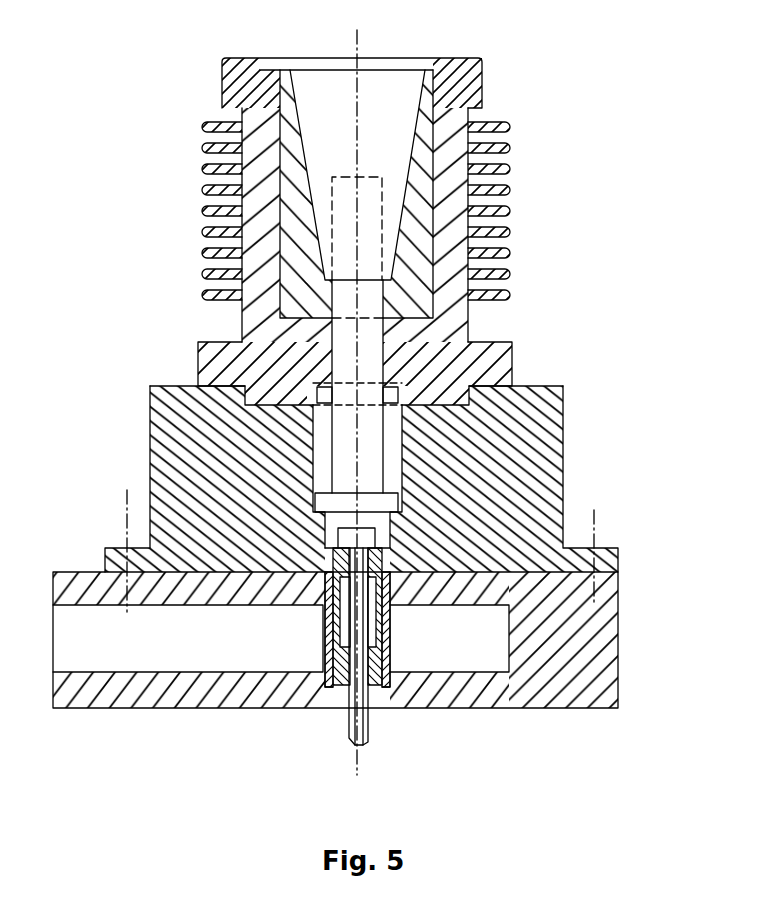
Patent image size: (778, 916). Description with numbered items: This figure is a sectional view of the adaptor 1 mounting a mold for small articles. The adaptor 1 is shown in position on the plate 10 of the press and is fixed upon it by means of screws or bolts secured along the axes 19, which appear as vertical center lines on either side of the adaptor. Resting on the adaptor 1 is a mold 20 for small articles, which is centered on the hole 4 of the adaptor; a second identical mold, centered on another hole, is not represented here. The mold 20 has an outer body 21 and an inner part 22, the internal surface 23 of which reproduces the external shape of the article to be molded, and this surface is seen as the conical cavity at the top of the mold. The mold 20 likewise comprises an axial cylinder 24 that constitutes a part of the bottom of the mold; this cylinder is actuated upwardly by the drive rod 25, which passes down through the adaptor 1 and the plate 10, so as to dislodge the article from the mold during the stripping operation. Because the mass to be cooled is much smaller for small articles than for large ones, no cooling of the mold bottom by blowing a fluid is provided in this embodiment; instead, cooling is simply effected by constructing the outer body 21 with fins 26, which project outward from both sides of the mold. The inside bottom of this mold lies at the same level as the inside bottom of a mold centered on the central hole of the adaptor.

The adaptor 1 is at (513, 523).
The hole 4 is at (401, 410).
The plate 10 is at (575, 653).
The axes 19 is at (116, 538).
The mold 20 is at (490, 74).
The outer body 21 is at (445, 333).
The inner part 22 is at (423, 243).
The internal surface 23 is at (407, 130).
The axial cylinder 24 is at (372, 345).
The drive rod 25 is at (352, 712).
The fins 26 is at (508, 191).